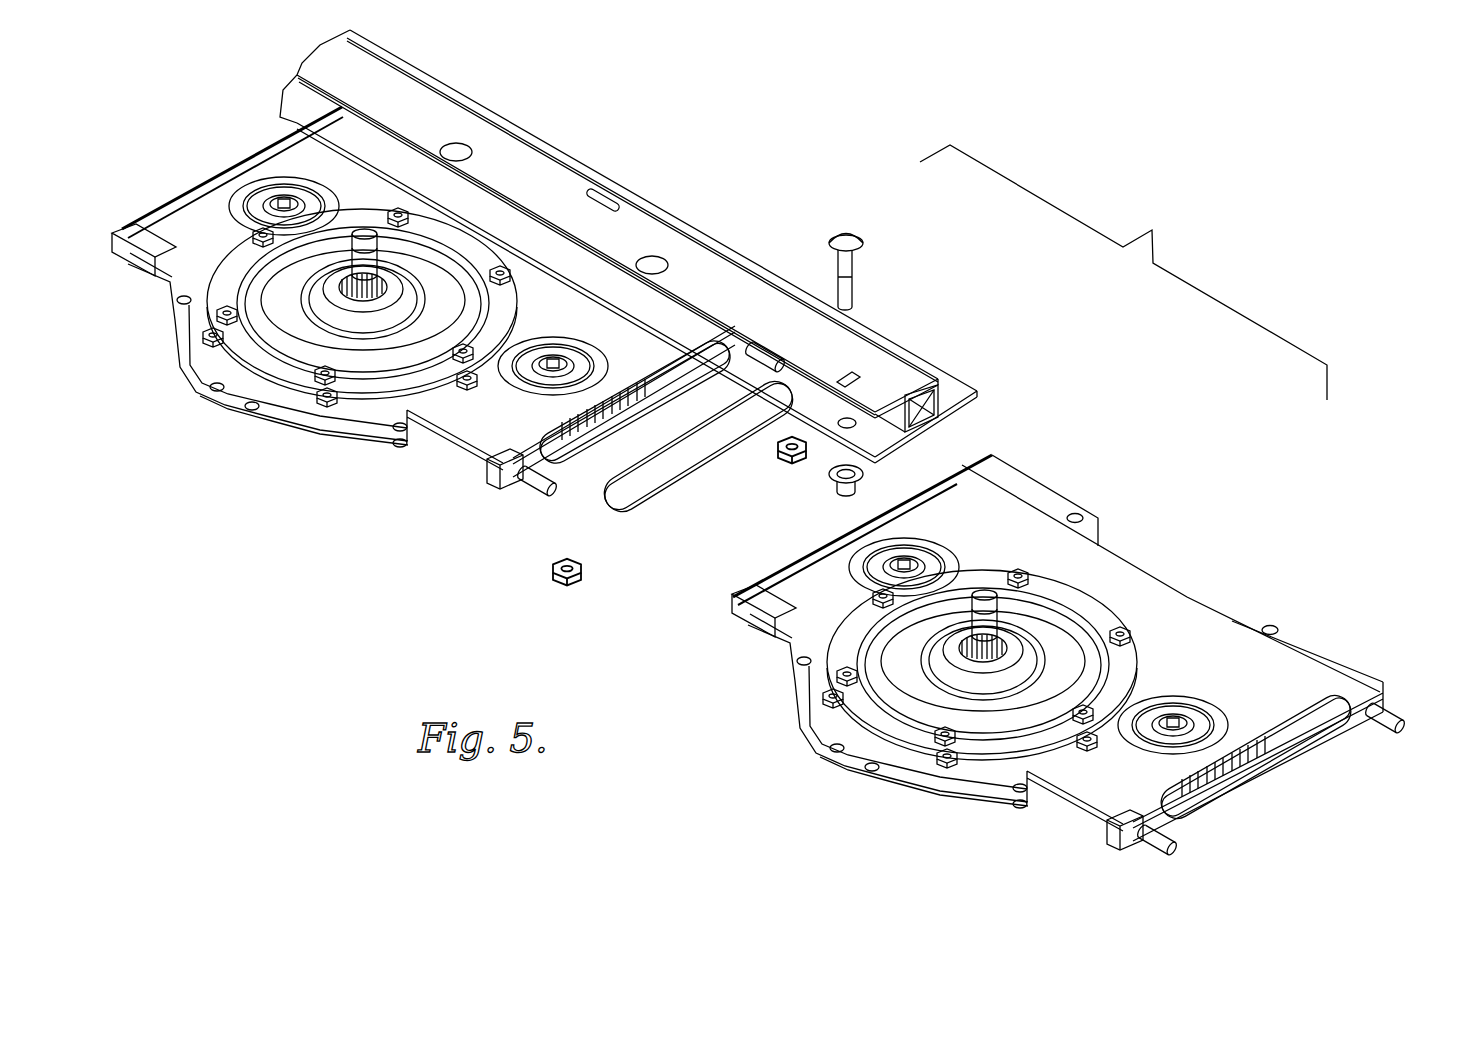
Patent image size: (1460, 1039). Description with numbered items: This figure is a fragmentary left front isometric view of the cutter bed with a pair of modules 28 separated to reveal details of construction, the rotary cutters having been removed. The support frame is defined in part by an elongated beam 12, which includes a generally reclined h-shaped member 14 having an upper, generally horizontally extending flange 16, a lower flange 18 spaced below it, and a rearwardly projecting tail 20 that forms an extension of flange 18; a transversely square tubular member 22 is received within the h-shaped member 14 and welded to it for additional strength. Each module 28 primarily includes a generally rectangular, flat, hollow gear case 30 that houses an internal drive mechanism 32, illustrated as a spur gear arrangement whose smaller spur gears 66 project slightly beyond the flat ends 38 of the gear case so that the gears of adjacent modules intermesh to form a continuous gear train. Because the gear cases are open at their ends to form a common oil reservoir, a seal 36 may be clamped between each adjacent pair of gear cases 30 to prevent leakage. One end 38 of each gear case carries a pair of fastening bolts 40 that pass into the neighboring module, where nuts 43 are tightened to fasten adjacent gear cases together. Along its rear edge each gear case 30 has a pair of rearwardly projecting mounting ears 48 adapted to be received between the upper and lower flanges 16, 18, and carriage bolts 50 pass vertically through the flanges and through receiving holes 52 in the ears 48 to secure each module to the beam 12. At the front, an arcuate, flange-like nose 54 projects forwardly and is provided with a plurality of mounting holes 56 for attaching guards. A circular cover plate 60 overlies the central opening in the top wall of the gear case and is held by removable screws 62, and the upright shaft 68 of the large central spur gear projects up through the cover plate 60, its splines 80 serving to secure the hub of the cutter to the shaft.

The beam 12 is at (485, 100).
The h-shaped member 14 is at (853, 360).
The upper flange 16 is at (900, 375).
The lower flange 18 is at (902, 418).
The tail 20 is at (960, 413).
The square tubular member 22 is at (905, 432).
The cutter module 28 is at (296, 455).
The gear case 30 is at (483, 424).
The drive mechanism 32 is at (1270, 768).
The seal 36 is at (628, 502).
The flat end 38 is at (108, 236).
The fastening bolt 40 is at (770, 360).
The nut 43 is at (552, 583).
The mounting ear 48 is at (1040, 485).
The carriage bolt 50 is at (452, 146).
The receiving hole 52 is at (1083, 514).
The nose 54 is at (270, 417).
The mounting hole 56 is at (208, 387).
The cover plate 60 is at (515, 313).
The screw 62 is at (510, 273).
The smaller spur gear 66 is at (582, 442).
The shaft 68 is at (365, 235).
The splines 80 is at (415, 284).